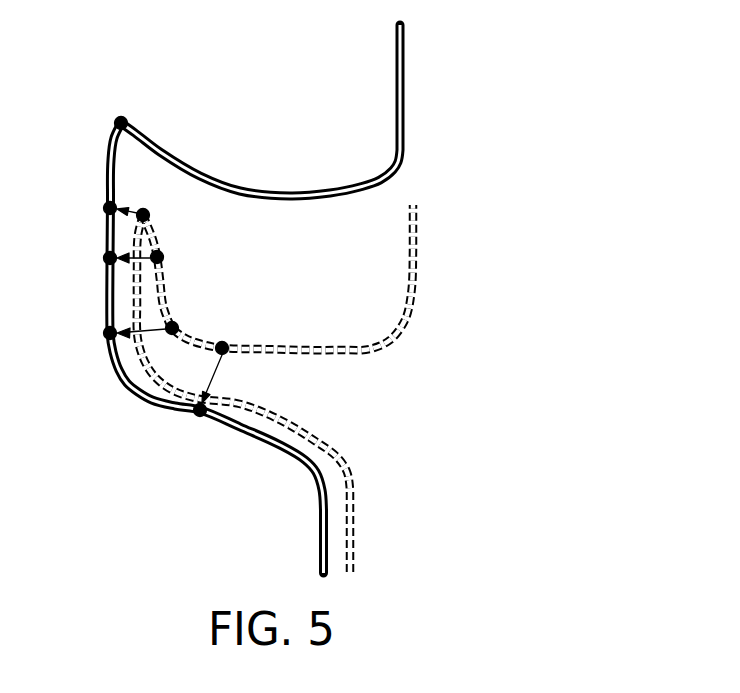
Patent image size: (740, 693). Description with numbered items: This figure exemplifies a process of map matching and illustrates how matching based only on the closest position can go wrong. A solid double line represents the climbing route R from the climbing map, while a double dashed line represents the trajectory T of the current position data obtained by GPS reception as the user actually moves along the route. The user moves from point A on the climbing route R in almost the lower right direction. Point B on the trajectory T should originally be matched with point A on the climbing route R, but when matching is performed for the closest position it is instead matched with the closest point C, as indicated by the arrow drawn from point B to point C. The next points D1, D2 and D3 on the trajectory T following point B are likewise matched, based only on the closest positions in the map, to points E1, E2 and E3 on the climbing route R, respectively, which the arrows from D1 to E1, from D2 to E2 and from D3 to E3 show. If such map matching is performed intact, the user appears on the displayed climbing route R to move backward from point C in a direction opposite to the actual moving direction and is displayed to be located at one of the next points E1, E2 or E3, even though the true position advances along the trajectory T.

The climbing route R is at (396, 70).
The trajectory T is at (408, 241).
The point A is at (120, 111).
The point B is at (135, 203).
The point C is at (100, 207).
The point D1 is at (156, 259).
The point D2 is at (164, 318).
The point D3 is at (225, 358).
The point E1 is at (94, 259).
The point E2 is at (94, 337).
The point E3 is at (193, 427).